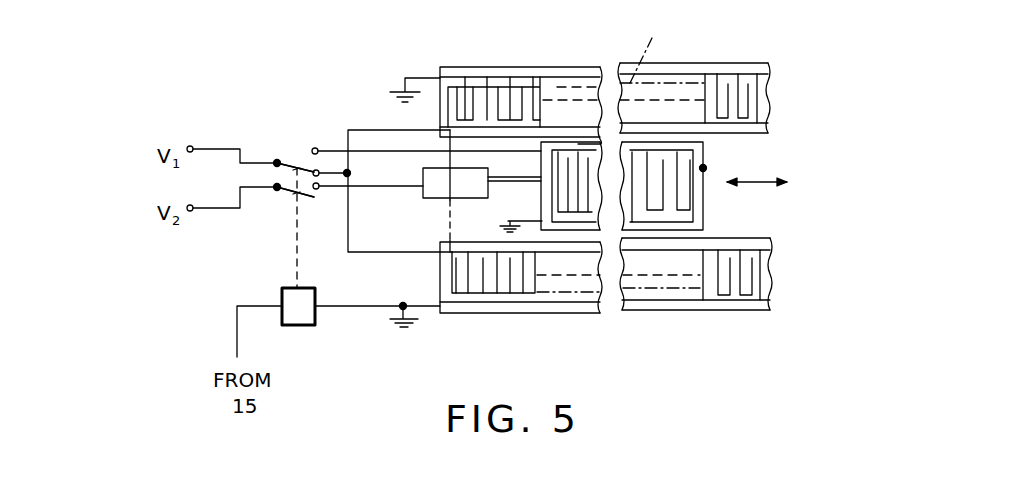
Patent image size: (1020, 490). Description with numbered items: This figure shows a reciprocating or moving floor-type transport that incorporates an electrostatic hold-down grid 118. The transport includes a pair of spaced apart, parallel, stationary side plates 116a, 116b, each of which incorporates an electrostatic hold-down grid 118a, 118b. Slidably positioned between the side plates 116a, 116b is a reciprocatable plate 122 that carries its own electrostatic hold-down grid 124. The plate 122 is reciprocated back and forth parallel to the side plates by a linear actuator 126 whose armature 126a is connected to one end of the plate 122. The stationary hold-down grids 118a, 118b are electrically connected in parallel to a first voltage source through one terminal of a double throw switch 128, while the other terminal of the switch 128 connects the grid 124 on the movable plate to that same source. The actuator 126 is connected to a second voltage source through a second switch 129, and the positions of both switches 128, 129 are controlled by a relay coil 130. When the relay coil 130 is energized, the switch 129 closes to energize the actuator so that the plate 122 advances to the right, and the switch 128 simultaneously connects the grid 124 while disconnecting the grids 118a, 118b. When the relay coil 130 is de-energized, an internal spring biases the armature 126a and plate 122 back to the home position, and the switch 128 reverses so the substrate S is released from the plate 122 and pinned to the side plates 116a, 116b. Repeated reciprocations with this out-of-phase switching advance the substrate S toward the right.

The stationary side plate 116a is at (465, 41).
The stationary side plate 116b is at (483, 361).
The stator winding 118 is at (490, 95).
The electrostatic hold-down grid 118a is at (585, 53).
The electrostatic hold-down grid 118b is at (746, 285).
The reciprocatable plate 122 is at (703, 208).
The electrostatic hold-down grid 124 is at (703, 168).
The linear actuator 126 is at (430, 185).
The armature 126a is at (517, 185).
The double throw switch 128 is at (300, 138).
The second switch 129 is at (288, 192).
The relay coil 130 is at (315, 325).
The substrate S is at (645, 49).